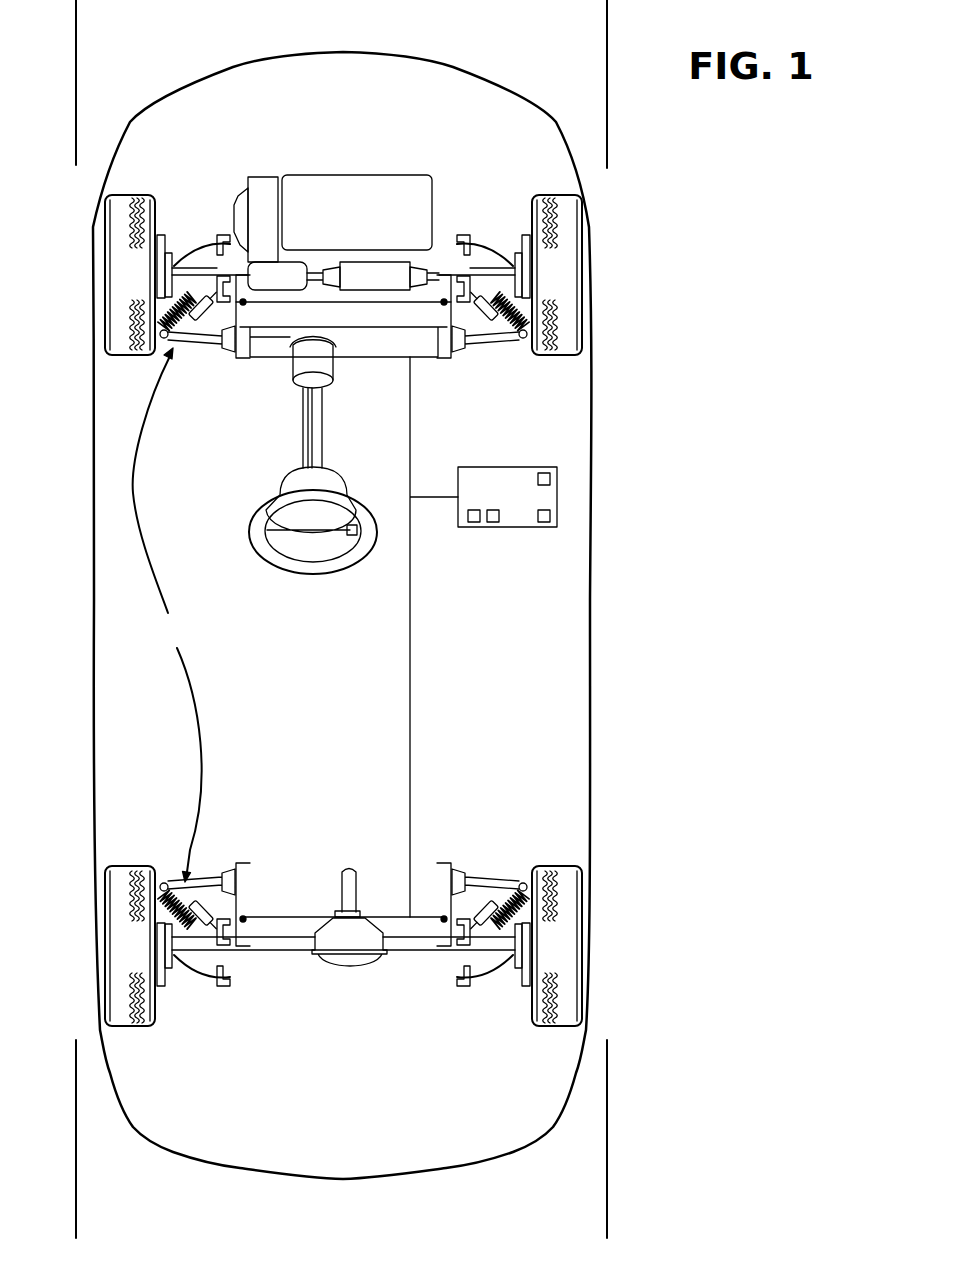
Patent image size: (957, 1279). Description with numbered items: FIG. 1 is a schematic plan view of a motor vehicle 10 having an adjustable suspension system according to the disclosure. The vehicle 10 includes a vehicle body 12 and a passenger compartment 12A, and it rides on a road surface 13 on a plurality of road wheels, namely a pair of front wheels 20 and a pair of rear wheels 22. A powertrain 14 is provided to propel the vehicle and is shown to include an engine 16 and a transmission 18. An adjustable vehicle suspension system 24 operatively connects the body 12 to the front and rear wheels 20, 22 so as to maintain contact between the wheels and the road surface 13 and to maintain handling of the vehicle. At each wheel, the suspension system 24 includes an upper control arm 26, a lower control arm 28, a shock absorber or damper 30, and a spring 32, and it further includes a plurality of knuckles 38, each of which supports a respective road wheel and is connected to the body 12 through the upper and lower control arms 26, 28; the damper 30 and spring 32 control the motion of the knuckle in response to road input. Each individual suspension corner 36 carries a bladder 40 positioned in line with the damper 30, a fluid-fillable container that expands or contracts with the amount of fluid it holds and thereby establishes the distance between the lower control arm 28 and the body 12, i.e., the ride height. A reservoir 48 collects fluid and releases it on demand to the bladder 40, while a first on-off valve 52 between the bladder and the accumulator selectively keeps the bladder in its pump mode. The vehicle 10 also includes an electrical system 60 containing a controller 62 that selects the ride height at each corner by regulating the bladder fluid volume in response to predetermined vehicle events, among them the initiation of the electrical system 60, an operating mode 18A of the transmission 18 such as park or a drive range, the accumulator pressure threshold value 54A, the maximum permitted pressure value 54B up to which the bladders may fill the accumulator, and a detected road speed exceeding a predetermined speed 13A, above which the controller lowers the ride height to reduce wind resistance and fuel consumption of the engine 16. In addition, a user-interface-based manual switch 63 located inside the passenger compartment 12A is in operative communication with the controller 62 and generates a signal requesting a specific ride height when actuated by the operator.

The motor vehicle 10 is at (628, 478).
The vehicle body 12 is at (602, 614).
The passenger compartment 12A is at (292, 592).
The road surface 13 is at (146, 41).
The predetermined speed 13A is at (493, 522).
The powertrain 14 is at (322, 168).
The engine 16 is at (362, 208).
The transmission 18 is at (263, 188).
The operating mode of the transmission 18A is at (468, 517).
The front wheels 20 is at (106, 258).
The rear wheels 22 is at (106, 975).
The adjustable vehicle suspension system 24 is at (167, 615).
The upper control arm 26 is at (220, 316).
The lower control arm 28 is at (185, 248).
The shock absorber or damper 30 is at (190, 327).
The spring 32 is at (175, 312).
The suspension corner 36 is at (170, 250).
The knuckle 38 is at (183, 262).
The bladder 40 is at (172, 268).
The reservoir 48 is at (248, 280).
The first on-off valve 52 is at (247, 300).
The accumulator pressure threshold value 54A is at (550, 520).
The maximum permitted pressure value 54B is at (550, 478).
The electrical system 60 is at (423, 628).
The controller 62 is at (497, 501).
The user-interface-based manual switch 63 is at (352, 526).